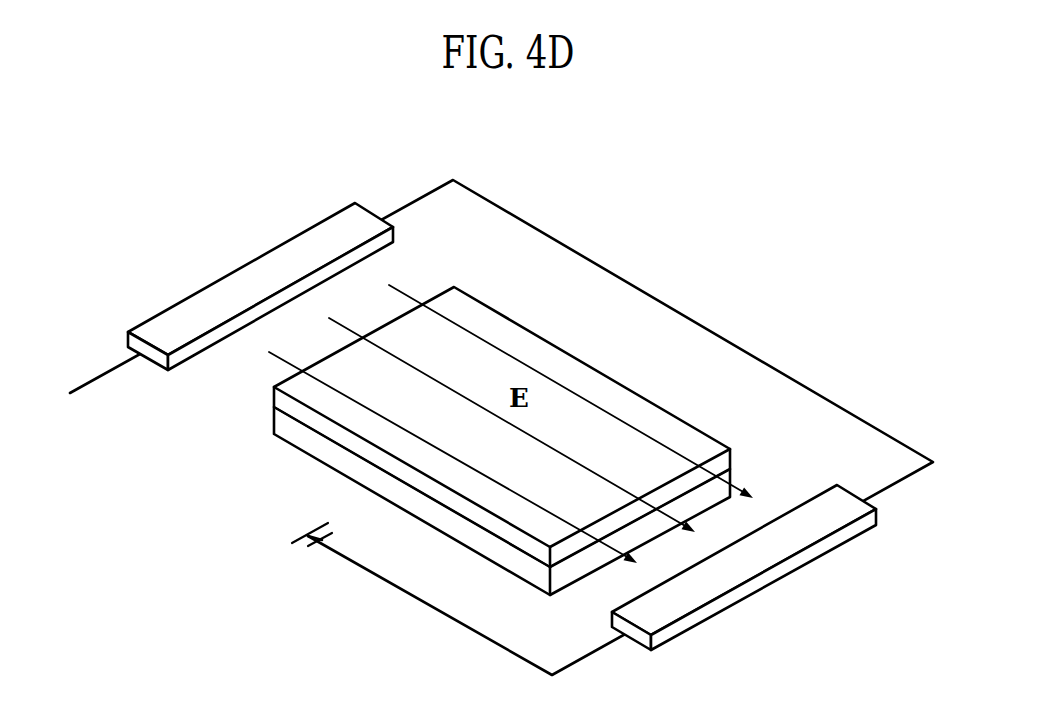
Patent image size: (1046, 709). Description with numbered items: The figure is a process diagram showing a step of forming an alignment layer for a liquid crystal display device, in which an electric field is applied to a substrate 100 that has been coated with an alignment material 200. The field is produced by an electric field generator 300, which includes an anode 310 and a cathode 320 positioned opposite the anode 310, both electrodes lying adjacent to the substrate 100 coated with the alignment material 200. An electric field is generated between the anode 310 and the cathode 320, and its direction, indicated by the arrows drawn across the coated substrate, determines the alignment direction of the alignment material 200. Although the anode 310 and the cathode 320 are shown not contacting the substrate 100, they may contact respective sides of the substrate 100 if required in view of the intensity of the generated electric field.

The substrate 100 is at (280, 427).
The alignment material 200 is at (278, 395).
The electric field generator 300 is at (297, 568).
The anode 310 is at (223, 283).
The cathode 320 is at (785, 568).